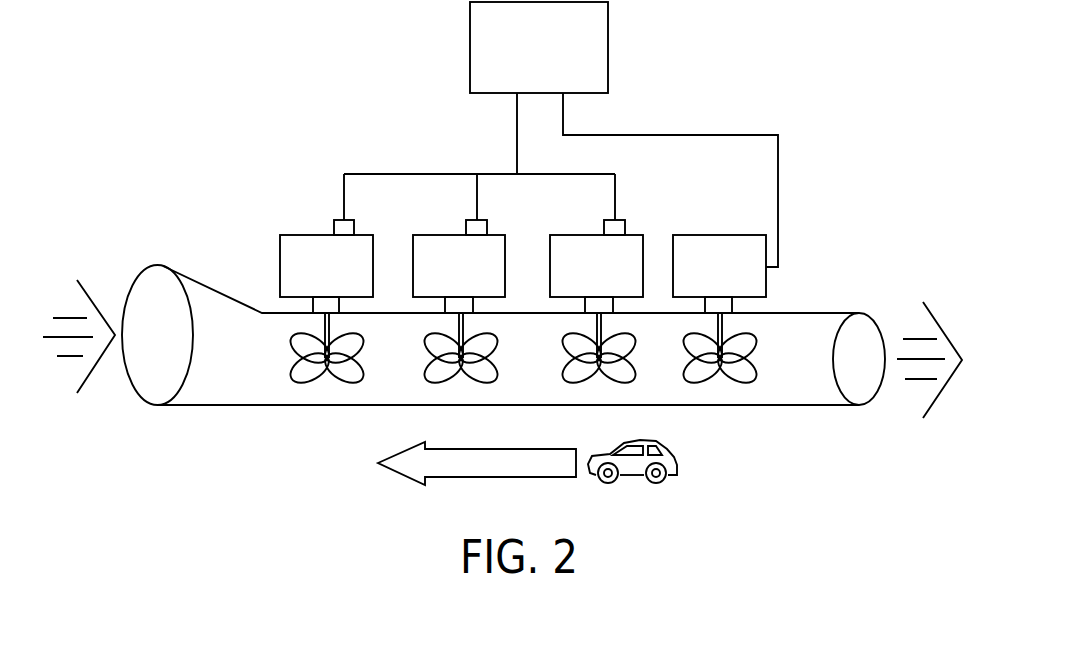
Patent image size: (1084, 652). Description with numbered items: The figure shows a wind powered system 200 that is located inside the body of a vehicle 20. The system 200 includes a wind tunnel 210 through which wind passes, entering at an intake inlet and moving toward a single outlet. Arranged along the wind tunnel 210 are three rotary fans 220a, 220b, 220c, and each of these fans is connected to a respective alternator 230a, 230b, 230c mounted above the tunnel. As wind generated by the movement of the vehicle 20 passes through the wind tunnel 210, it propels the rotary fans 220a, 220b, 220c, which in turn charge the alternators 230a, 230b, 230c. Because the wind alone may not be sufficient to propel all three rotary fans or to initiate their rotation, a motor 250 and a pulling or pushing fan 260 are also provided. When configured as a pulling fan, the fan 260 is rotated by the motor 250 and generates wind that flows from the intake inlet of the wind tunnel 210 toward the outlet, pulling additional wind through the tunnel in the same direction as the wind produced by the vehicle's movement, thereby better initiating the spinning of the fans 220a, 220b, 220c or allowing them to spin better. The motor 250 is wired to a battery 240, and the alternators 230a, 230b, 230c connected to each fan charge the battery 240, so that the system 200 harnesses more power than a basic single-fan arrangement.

The wind powered system 200 is at (255, 97).
The wind tunnel 210 is at (210, 287).
The rotary fan 220a is at (296, 382).
The rotary fan 220b is at (430, 382).
The rotary fan 220c is at (585, 383).
The alternator 230a is at (375, 248).
The alternator 230b is at (507, 248).
The alternator 230c is at (644, 246).
The battery 240 is at (609, 41).
The motor 250 is at (767, 252).
The pulling or pushing fan 260 is at (758, 375).
The vehicle 20 is at (680, 465).